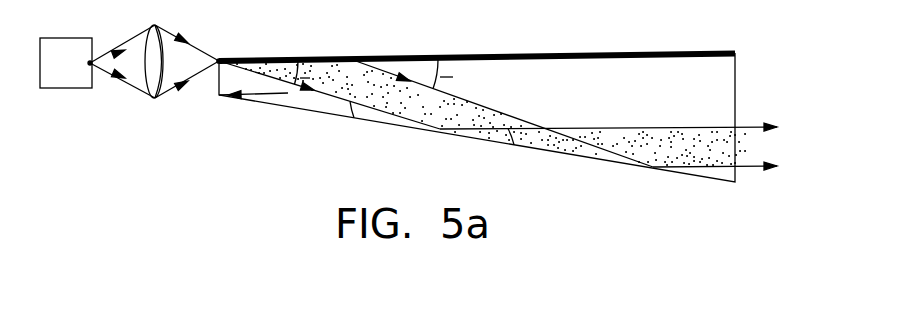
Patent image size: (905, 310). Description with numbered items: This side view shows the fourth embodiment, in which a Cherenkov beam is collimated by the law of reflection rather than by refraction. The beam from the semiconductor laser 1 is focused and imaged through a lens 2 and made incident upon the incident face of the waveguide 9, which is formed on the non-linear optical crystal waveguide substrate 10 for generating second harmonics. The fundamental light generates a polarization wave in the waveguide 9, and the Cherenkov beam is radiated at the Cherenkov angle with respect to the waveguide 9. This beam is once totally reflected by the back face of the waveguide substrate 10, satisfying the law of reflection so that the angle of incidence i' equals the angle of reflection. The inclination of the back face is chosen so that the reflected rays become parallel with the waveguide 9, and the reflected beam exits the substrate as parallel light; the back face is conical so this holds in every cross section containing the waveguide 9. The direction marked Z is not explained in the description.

The semiconductor laser 1 is at (64, 88).
The lens 2 is at (163, 80).
The waveguide 9 is at (291, 58).
The waveguide substrate 10 is at (558, 82).
The zeroth order beam Z is at (282, 94).
The angle of incidence i' is at (339, 131).